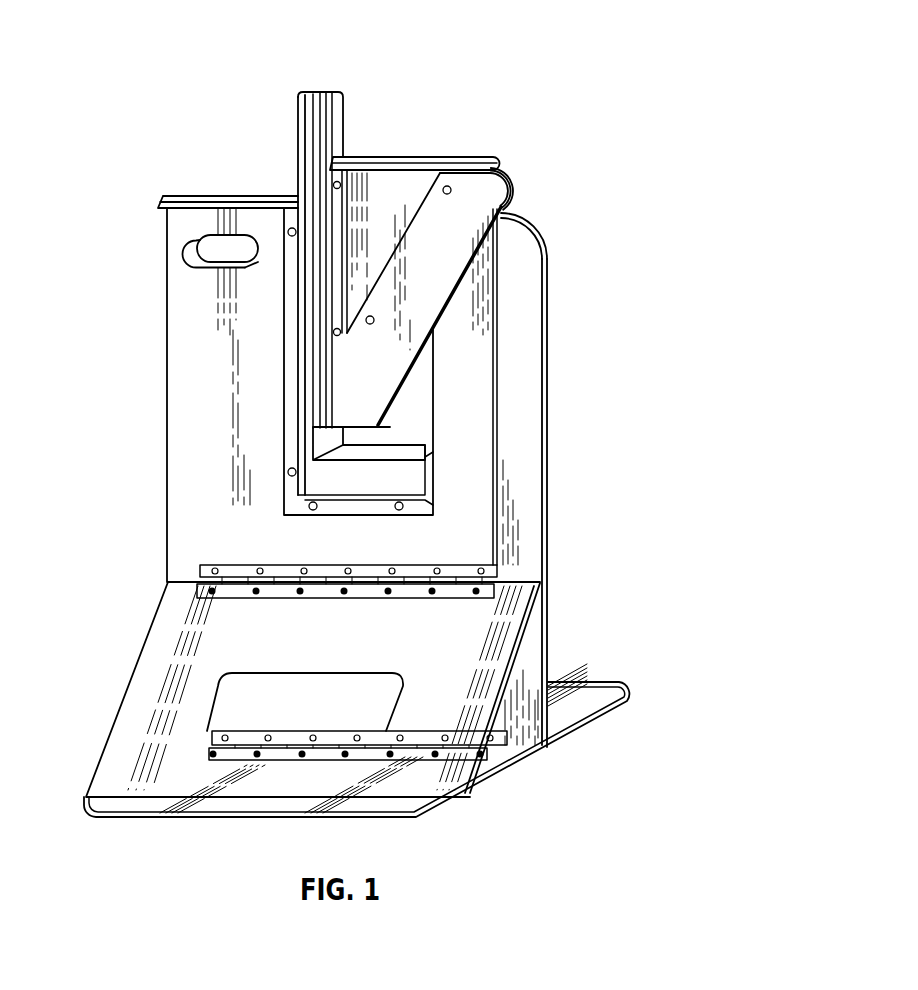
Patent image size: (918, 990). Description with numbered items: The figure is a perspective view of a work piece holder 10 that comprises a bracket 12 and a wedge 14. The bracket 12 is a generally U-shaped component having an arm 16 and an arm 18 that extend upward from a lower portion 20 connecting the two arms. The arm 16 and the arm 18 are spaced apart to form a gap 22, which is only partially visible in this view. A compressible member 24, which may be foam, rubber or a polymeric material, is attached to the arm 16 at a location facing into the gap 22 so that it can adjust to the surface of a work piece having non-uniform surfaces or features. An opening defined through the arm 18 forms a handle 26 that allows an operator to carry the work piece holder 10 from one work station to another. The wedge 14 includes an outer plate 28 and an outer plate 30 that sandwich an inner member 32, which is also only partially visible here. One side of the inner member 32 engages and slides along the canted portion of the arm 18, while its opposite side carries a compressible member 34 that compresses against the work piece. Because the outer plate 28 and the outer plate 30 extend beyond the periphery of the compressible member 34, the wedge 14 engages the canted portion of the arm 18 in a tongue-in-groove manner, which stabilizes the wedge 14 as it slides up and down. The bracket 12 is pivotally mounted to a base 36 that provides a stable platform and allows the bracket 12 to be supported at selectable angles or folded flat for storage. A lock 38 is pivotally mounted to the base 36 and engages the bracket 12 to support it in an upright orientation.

The work piece holder 10 is at (598, 47).
The bracket 12 is at (545, 248).
The wedge 14 is at (352, 160).
The arm 16 is at (186, 378).
The arm 18 is at (529, 388).
The lower portion 20 is at (298, 722).
The gap 22 is at (404, 428).
The compressible member 24 is at (301, 402).
The handle 26 is at (227, 248).
The outer plate 28 is at (480, 190).
The outer plate 30 is at (508, 178).
The inner member 32 is at (408, 158).
The compressible member 34 is at (320, 387).
The base 36 is at (87, 806).
The lock 38 is at (480, 770).